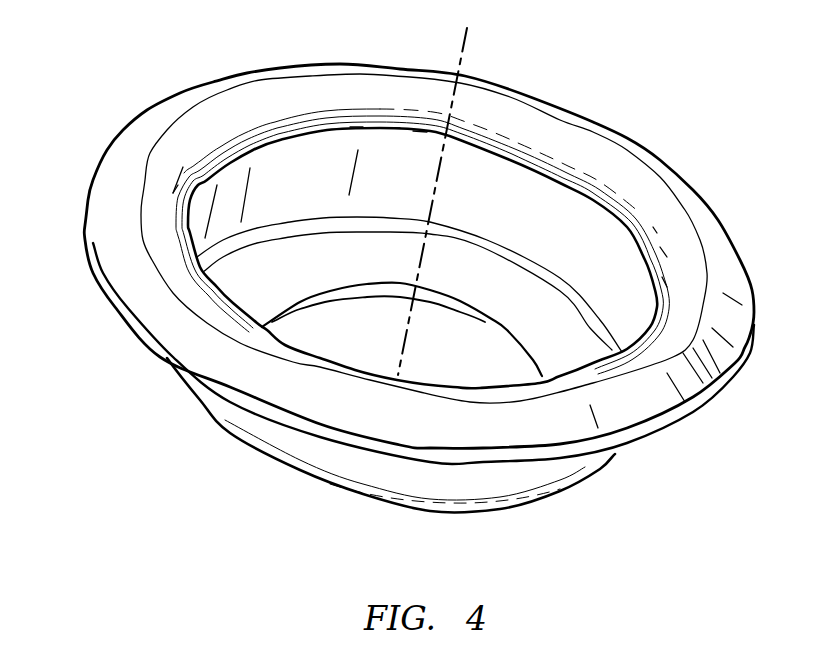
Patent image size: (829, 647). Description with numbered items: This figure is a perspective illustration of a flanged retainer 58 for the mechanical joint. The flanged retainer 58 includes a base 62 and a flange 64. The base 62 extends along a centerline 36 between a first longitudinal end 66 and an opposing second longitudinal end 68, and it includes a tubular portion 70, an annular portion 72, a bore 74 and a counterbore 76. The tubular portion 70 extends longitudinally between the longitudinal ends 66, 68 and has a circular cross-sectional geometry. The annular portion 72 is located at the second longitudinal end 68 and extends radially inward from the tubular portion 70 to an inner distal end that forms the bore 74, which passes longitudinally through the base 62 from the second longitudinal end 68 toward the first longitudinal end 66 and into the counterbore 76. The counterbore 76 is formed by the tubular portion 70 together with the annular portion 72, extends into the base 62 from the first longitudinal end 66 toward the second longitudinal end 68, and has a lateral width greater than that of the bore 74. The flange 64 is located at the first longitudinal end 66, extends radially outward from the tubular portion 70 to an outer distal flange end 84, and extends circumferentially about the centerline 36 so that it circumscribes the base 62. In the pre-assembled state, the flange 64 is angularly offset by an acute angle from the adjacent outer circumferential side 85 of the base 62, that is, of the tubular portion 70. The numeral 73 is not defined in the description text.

The centerline 36 is at (466, 52).
The flanged retainer 58 is at (680, 104).
The base 62 is at (212, 447).
The flange 64 is at (109, 168).
The first longitudinal end 66 is at (483, 387).
The second longitudinal end 68 is at (459, 511).
The tubular portion 70 is at (310, 168).
The annular portion 72 is at (350, 262).
The annular floor surface 73 is at (296, 303).
The bore 74 is at (458, 354).
The counterbore 76 is at (614, 258).
The outer distal flange end 84 is at (742, 357).
The outer circumferential side 85 is at (553, 473).